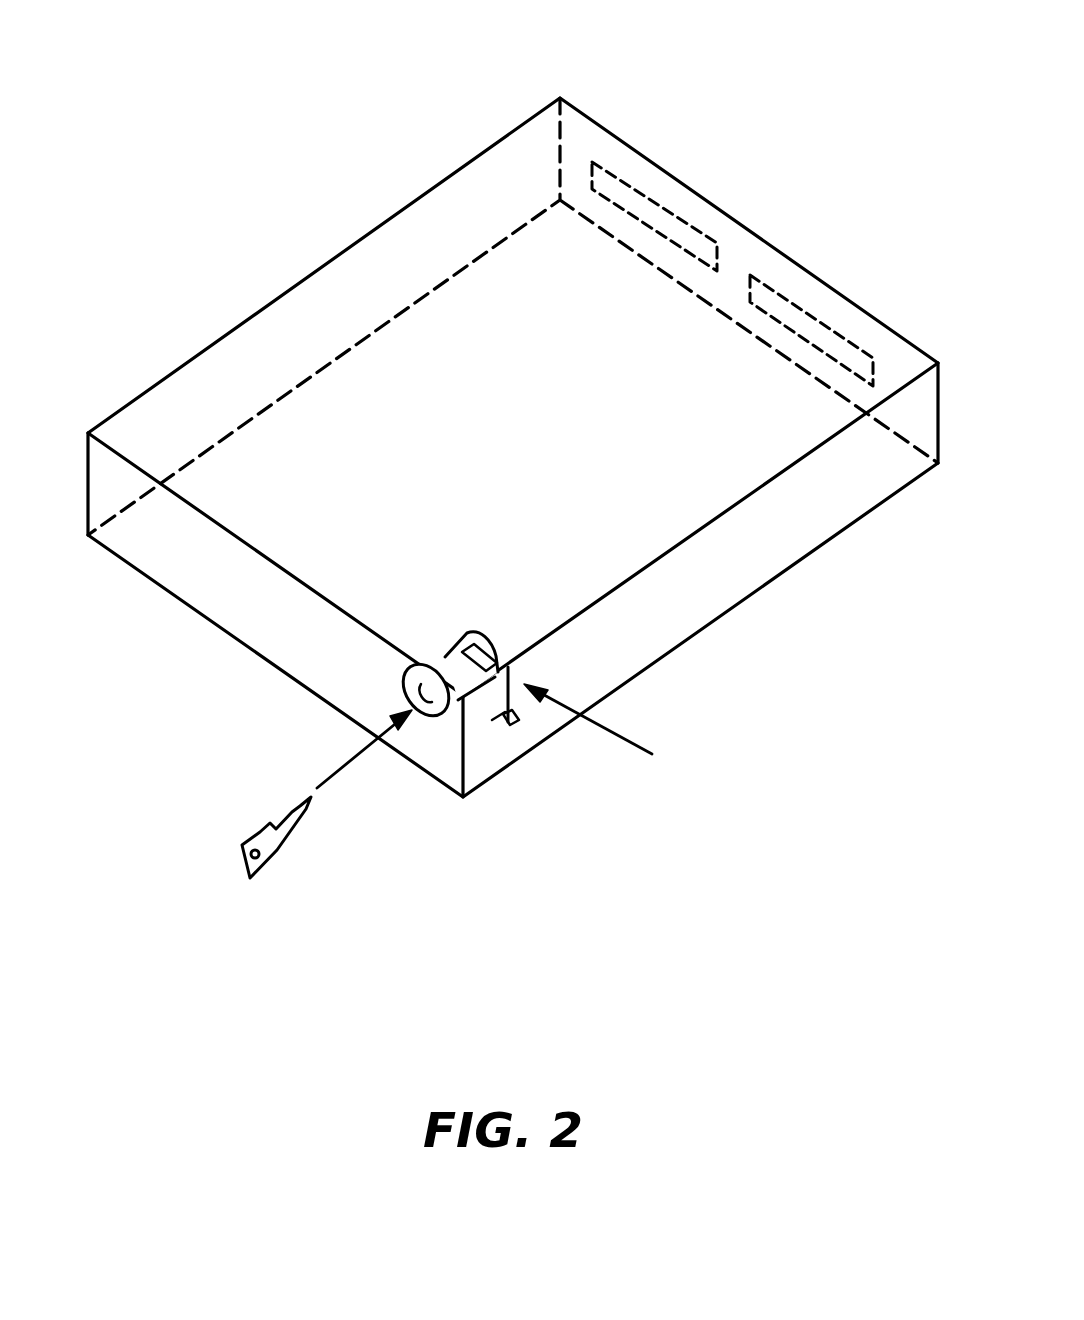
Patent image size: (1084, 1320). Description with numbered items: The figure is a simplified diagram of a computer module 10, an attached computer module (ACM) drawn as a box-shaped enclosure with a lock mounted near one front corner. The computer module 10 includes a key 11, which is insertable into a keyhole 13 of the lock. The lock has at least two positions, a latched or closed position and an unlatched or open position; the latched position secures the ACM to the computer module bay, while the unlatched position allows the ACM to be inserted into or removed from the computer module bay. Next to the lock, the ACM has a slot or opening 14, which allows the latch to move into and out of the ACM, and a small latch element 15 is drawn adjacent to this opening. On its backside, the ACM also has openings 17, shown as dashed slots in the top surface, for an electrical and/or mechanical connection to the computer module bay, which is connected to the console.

The computer module 10 is at (513, 404).
The key 11 is at (300, 806).
The keyhole 13 is at (443, 690).
The slot or opening 14 is at (512, 673).
The latch tab 15 is at (518, 733).
The openings 17 is at (813, 322).